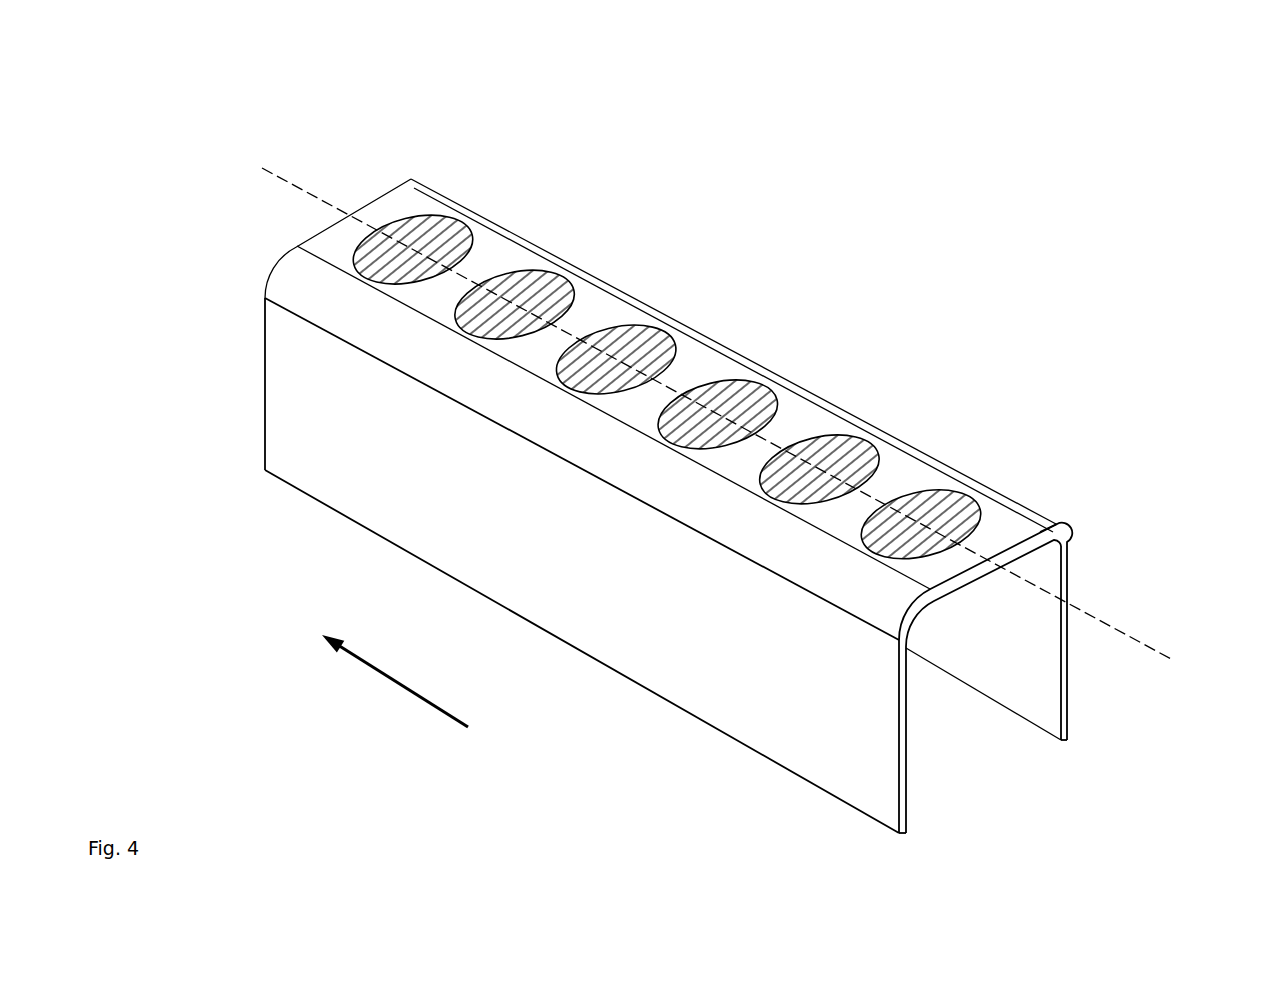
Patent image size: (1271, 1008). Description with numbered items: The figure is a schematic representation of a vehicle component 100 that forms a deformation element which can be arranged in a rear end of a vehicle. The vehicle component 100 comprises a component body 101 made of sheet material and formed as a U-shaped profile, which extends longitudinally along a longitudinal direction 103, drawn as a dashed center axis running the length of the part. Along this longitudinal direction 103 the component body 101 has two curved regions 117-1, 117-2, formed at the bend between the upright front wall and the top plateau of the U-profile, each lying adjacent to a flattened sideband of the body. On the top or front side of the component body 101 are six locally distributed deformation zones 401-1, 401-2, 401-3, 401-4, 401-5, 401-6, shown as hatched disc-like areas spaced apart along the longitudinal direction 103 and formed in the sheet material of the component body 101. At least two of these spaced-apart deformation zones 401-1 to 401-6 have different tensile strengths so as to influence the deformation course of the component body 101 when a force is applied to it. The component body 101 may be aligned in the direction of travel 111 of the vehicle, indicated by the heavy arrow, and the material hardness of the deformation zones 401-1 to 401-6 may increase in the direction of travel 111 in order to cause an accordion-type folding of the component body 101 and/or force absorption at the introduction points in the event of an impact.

The vehicle component 100 is at (325, 140).
The component body 101 is at (492, 267).
The longitudinal direction 103 is at (739, 414).
The direction of travel 111 is at (395, 681).
The curved region 117-1 is at (1050, 521).
The curved region 117-2 is at (284, 284).
The deformation zone 401-1 is at (459, 230).
The deformation zone 401-2 is at (550, 291).
The deformation zone 401-3 is at (651, 345).
The deformation zone 401-4 is at (754, 407).
The deformation zone 401-5 is at (855, 458).
The deformation zone 401-6 is at (953, 510).